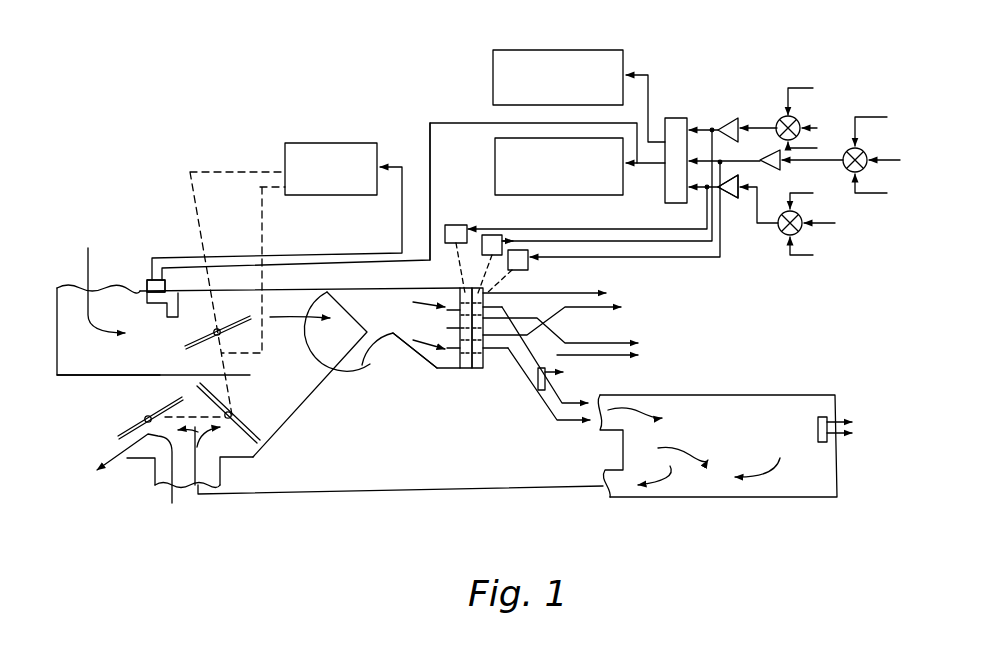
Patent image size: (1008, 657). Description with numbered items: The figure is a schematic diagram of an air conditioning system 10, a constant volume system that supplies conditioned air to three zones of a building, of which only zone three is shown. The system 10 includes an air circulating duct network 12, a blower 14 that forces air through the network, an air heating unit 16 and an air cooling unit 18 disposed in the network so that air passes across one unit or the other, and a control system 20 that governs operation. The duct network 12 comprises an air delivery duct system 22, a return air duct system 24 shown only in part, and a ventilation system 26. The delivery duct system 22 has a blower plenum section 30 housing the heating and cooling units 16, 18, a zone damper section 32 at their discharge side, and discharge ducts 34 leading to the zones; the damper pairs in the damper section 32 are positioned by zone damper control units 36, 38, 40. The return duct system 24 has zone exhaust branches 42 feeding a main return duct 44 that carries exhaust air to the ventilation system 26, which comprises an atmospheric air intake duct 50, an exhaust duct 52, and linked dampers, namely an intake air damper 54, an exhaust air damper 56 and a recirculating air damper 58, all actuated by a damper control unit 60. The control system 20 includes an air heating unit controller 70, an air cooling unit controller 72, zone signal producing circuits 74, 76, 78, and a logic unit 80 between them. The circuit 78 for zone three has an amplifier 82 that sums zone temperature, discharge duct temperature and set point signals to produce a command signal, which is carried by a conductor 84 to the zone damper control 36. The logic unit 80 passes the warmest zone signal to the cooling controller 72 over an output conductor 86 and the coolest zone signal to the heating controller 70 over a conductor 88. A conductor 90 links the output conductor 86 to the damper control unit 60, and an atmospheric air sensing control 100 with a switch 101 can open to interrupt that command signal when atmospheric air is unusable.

The air conditioning system 10 is at (225, 122).
The air circulating duct network 12 is at (312, 402).
The blower 14 is at (357, 362).
The air heating unit 16 is at (457, 297).
The air cooling unit 18 is at (455, 370).
The control system 20 is at (425, 80).
The air delivery duct system 22 is at (437, 371).
The return air duct system 24 is at (230, 470).
The ventilation system 26 is at (85, 382).
The blower plenum section 30 is at (415, 322).
The zone damper section 32 is at (486, 303).
The discharge duct 34 is at (612, 396).
The zone damper control unit 36 is at (462, 225).
The zone damper control unit 38 is at (490, 236).
The zone damper control unit 40 is at (518, 250).
The zone exhaust branch 42 is at (610, 497).
The main return duct 44 is at (207, 477).
The atmospheric air intake duct 50 is at (70, 298).
The exhaust duct 52 is at (145, 458).
The intake air damper 54 is at (207, 335).
The exhaust air damper 56 is at (143, 420).
The recirculating air damper 58 is at (350, 333).
The damper control unit 60 is at (318, 143).
The air heating unit controller 70 is at (550, 47).
The air cooling unit controller 72 is at (494, 167).
The zone signal producing circuit 74 is at (762, 108).
The zone signal producing circuit 76 is at (882, 198).
The zone signal producing circuit 78 is at (750, 238).
The logic unit 80 is at (678, 118).
The amplifier 82 is at (728, 198).
The conductor 84 is at (582, 230).
The output conductor 86 is at (652, 166).
The conductor 88 is at (642, 70).
The conductor 90 is at (430, 160).
The atmospheric air sensing control 100 is at (128, 280).
The switch 101 is at (168, 282).